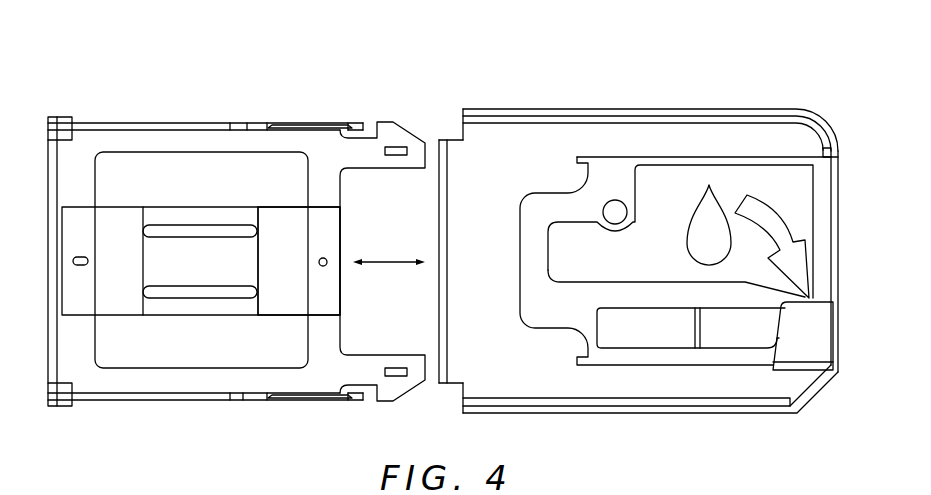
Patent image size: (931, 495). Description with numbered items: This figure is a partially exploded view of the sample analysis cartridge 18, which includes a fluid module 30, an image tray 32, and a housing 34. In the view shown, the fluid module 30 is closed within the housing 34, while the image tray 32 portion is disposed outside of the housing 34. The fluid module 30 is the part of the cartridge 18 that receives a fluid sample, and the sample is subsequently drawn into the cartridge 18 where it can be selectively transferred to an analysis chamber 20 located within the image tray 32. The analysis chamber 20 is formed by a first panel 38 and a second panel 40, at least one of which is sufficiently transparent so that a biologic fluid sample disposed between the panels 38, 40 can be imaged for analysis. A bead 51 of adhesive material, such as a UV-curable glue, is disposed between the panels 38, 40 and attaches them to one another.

The sample analysis cartridge 18 is at (128, 68).
The analysis chamber 20 is at (157, 332).
The fluid module 30 is at (780, 190).
The image tray 32 is at (256, 108).
The housing 34 is at (649, 100).
The first panel 38 is at (243, 253).
The second panel 40 is at (283, 302).
The bead of adhesive material 51 is at (183, 232).